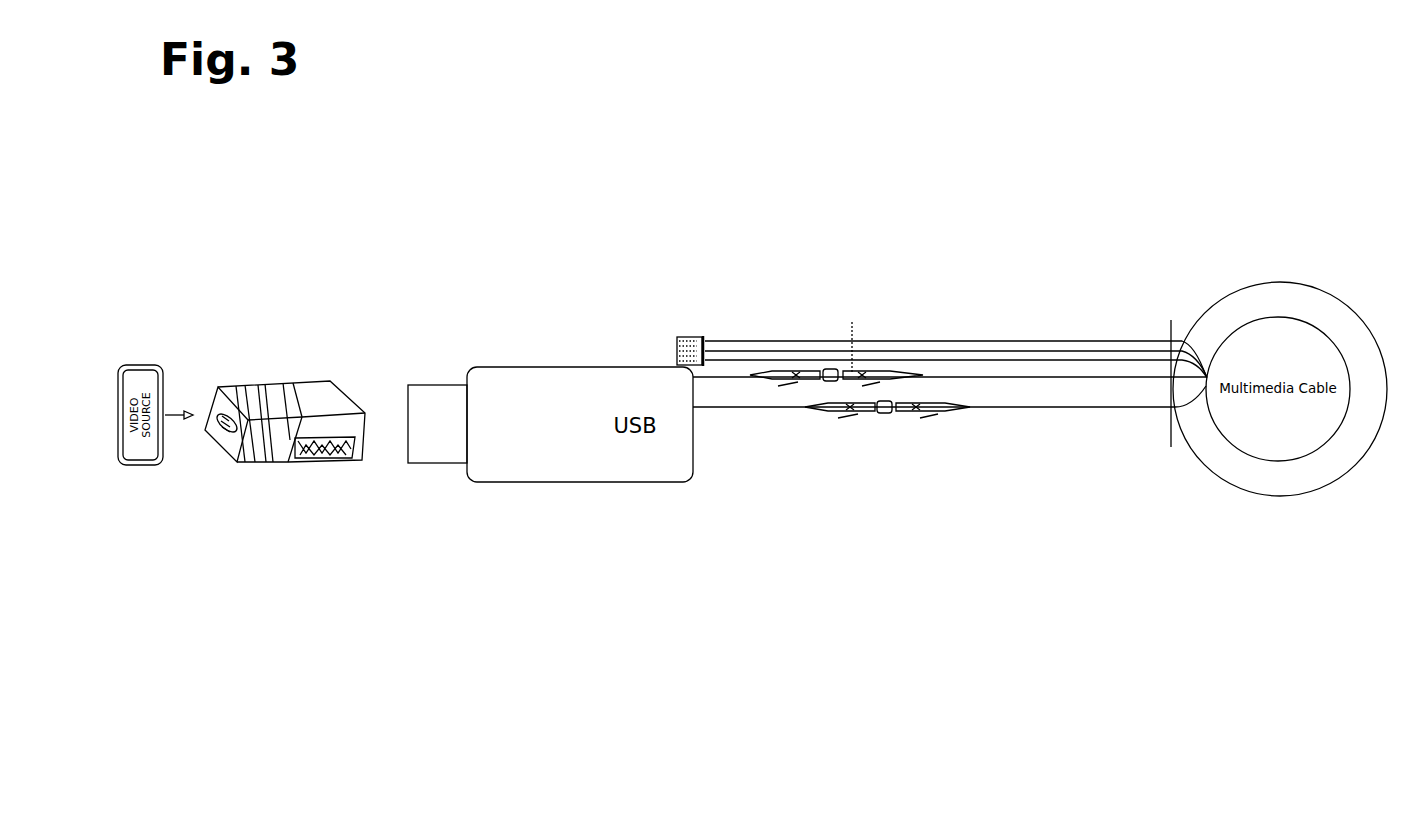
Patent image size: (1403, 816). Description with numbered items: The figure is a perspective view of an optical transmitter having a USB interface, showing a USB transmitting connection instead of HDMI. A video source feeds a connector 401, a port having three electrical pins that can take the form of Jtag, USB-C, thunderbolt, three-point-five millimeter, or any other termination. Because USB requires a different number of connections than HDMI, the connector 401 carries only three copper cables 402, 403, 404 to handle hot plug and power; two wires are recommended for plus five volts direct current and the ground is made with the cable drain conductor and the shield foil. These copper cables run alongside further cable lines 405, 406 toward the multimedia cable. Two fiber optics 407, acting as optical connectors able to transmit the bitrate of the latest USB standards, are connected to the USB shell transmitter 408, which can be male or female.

The connector 401 is at (338, 387).
The copper cable 402 is at (937, 340).
The copper cable 403 is at (1005, 350).
The copper cable 404 is at (1080, 360).
The fourth signal line 405 is at (1077, 378).
The fifth signal line 406 is at (1003, 410).
The optical connector 407 is at (845, 416).
The USB shell transmitter 408 is at (690, 335).